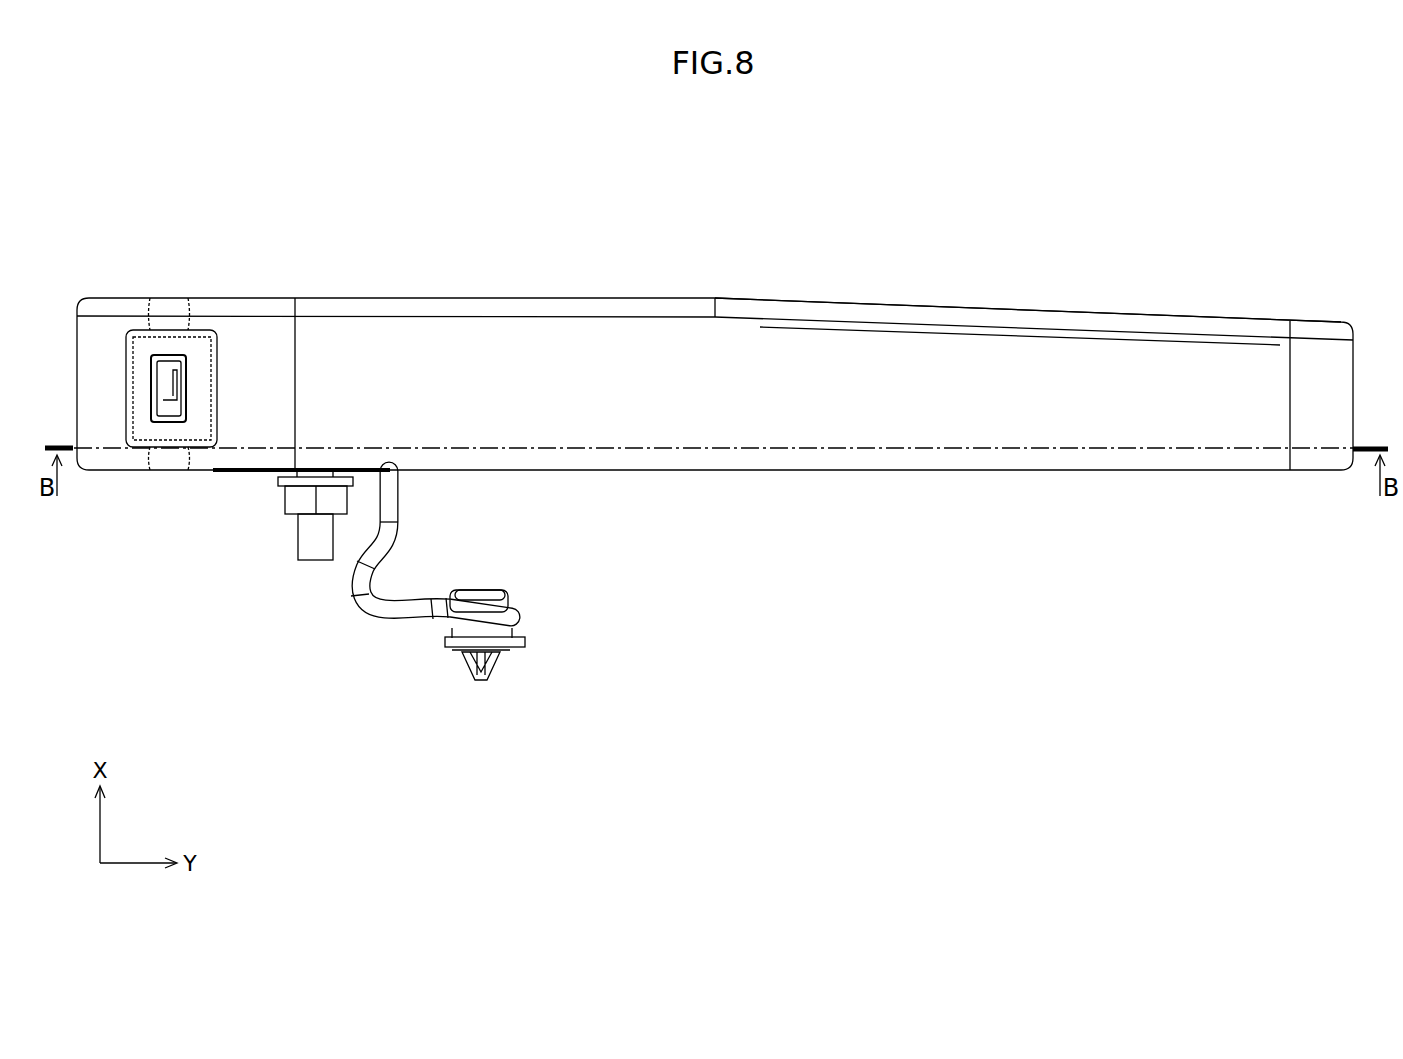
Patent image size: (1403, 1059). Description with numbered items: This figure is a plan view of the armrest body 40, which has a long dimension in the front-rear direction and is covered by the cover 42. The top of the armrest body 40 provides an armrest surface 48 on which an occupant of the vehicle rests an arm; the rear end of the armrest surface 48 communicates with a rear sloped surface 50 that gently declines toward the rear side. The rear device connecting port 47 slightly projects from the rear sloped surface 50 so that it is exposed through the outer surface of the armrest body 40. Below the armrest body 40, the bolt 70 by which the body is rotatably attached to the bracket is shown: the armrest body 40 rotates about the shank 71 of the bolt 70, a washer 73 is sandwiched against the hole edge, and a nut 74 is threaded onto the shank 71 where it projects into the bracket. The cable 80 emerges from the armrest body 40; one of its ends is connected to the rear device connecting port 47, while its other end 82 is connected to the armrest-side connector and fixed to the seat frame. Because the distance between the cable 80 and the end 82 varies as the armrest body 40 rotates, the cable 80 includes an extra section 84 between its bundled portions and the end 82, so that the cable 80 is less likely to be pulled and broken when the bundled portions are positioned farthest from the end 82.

The armrest body 40 is at (748, 258).
The cover 42 is at (1108, 312).
The rear device connecting port 47 is at (139, 356).
The armrest surface 48 is at (1000, 378).
The rear sloped surface 50 is at (172, 320).
The bolt 70 is at (269, 564).
The shank 71 is at (318, 540).
The washer 73 is at (279, 480).
The nut 74 is at (297, 503).
The cable 80 is at (501, 655).
The end of the cable 82 is at (520, 612).
The extra section 84 is at (373, 601).